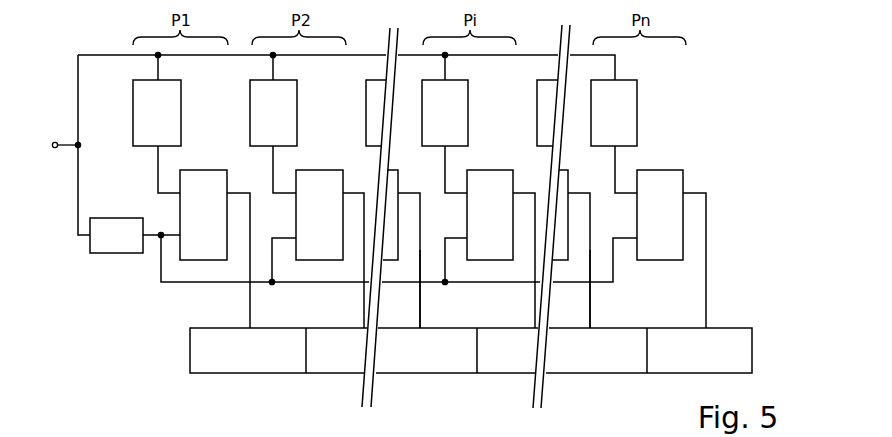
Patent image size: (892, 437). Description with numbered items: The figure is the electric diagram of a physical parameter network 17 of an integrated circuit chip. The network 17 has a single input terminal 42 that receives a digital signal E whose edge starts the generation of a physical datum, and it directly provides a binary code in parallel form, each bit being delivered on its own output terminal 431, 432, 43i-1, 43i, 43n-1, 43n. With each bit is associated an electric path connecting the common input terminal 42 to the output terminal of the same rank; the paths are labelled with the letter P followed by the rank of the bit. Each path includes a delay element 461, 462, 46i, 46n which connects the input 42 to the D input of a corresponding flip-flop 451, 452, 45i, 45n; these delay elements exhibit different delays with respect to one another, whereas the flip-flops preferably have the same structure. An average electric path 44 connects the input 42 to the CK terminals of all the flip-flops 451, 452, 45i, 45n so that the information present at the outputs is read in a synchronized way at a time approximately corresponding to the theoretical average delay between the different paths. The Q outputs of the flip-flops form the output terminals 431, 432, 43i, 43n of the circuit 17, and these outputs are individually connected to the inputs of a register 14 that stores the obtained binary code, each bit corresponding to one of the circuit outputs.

The physical parameter network 17 is at (122, 345).
The input terminal 42 is at (56, 149).
The average electric path 44 is at (92, 254).
The delay element 461 is at (182, 97).
The delay element 462 is at (298, 97).
The delay element 46i is at (469, 97).
The delay element 46n is at (638, 97).
The flip-flop 451 is at (199, 170).
The flip-flop 452 is at (319, 170).
The flip-flop 45i is at (489, 170).
The flip-flop 45n is at (659, 170).
The output terminal 431 is at (250, 298).
The output terminal 432 is at (364, 298).
The output terminal 43i-1 is at (420, 298).
The output terminal 43i is at (535, 298).
The output terminal 43n-1 is at (590, 298).
The output terminal 43n is at (706, 298).
The register 14 is at (190, 345).